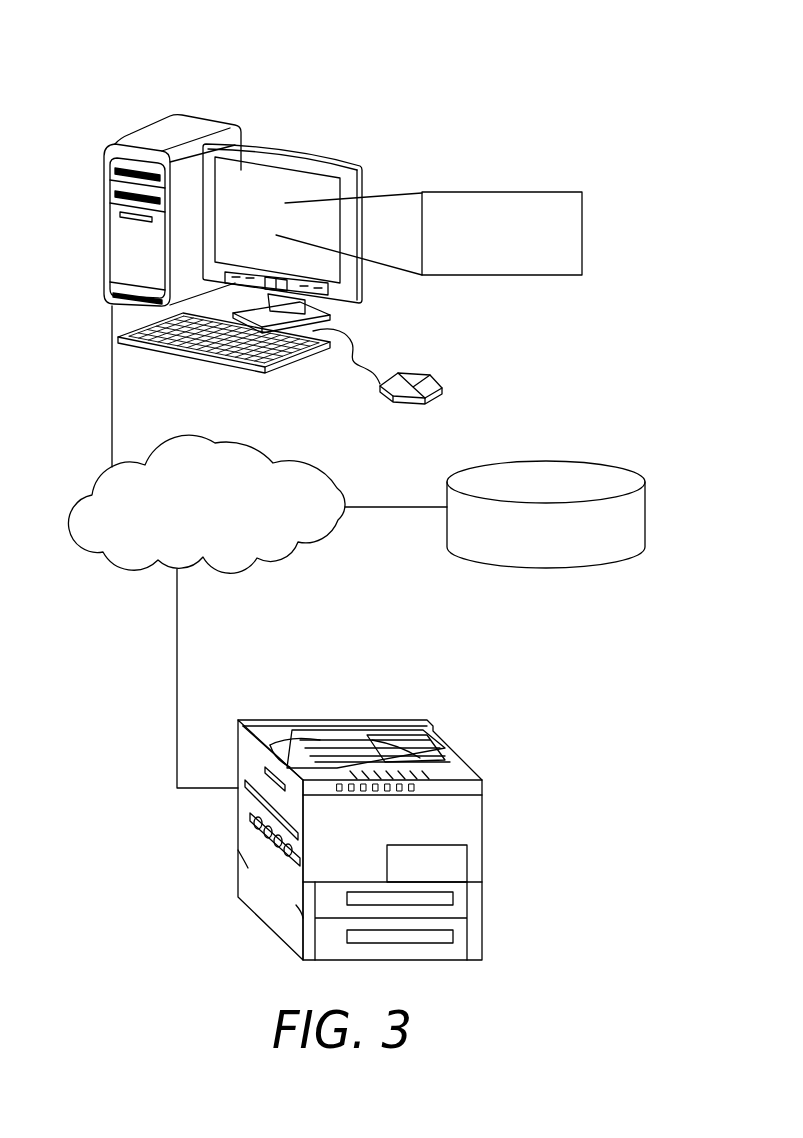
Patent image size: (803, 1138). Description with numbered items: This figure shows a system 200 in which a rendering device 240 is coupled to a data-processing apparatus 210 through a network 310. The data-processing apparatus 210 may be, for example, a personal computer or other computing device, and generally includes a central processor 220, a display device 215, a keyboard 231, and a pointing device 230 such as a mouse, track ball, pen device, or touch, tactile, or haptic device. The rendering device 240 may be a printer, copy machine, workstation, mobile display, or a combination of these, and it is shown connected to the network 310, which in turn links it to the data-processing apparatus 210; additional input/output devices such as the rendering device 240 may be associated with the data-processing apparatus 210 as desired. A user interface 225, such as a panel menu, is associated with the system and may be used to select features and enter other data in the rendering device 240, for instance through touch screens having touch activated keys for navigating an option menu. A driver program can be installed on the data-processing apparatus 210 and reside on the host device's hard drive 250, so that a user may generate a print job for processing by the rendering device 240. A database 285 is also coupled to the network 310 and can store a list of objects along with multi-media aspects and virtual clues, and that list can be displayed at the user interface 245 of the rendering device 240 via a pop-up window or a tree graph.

The system 200 is at (445, 91).
The data-processing apparatus 210 is at (303, 187).
The display device 215 is at (285, 147).
The central processor 220 is at (104, 299).
The user interface 225 is at (520, 191).
The pointing device 230 is at (387, 349).
The keyboard 231 is at (193, 348).
The rendering device 240 is at (377, 720).
The user interface 245 is at (413, 748).
The hard drive 250 is at (140, 123).
The database 285 is at (587, 460).
The network 310 is at (237, 443).